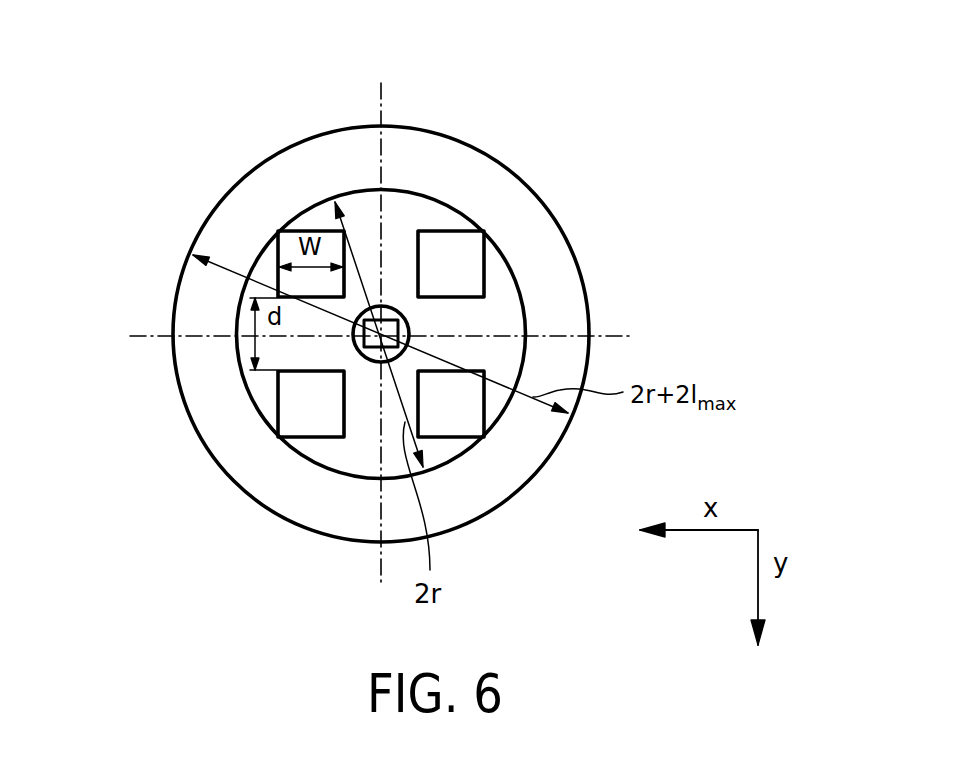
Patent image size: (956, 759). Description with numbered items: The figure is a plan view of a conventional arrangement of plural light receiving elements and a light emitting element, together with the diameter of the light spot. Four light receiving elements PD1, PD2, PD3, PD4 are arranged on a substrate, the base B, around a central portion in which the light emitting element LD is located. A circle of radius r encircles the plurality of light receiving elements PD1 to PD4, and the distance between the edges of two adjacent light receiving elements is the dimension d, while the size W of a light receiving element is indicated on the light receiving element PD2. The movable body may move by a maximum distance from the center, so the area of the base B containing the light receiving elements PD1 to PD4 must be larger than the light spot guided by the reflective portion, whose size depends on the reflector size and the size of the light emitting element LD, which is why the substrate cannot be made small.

The base B is at (447, 143).
The light emitting element LD is at (392, 327).
The light receiving element PD1 is at (287, 417).
The light receiving element PD2 is at (287, 245).
The light receiving element PD3 is at (455, 422).
The light receiving element PD4 is at (460, 242).